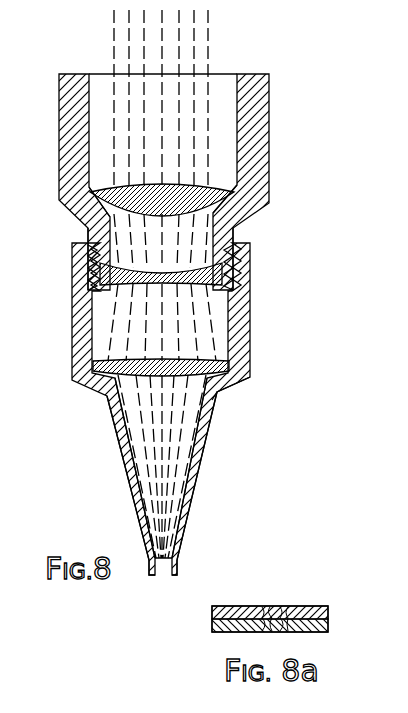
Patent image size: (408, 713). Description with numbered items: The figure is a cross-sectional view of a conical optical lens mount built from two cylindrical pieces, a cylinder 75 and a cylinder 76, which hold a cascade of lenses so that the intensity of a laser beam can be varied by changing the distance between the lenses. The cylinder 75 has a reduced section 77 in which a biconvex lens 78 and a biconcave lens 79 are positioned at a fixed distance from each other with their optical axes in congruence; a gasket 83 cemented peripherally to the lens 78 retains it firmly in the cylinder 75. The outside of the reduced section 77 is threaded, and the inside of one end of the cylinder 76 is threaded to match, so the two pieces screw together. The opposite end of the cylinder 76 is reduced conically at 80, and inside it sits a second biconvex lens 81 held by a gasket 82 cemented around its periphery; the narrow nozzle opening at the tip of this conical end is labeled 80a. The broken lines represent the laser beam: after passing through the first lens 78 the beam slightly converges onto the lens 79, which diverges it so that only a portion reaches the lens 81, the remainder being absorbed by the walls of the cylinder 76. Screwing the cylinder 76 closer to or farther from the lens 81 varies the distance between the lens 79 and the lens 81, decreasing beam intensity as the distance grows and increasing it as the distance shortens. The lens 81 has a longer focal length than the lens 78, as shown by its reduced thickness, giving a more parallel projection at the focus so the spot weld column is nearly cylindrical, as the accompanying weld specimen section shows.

The cylinder 75 is at (266, 124).
The cylinder 76 is at (247, 334).
The reduced section 77 is at (235, 234).
The biconvex lens 78 is at (228, 210).
The biconcave lens 79 is at (222, 279).
The conically reduced end 80 is at (197, 476).
The nozzle tip opening 80a is at (179, 568).
The biconvex lens 81 is at (214, 396).
The gasket 82 is at (97, 362).
The gasket 83 is at (215, 190).